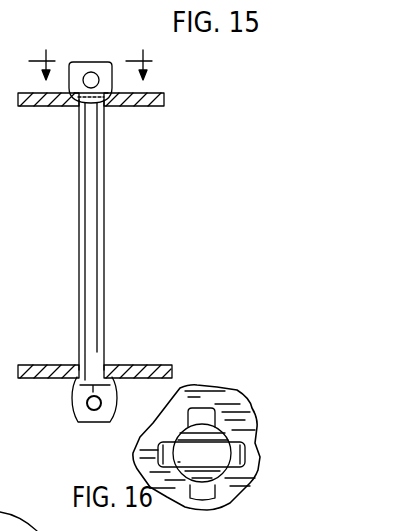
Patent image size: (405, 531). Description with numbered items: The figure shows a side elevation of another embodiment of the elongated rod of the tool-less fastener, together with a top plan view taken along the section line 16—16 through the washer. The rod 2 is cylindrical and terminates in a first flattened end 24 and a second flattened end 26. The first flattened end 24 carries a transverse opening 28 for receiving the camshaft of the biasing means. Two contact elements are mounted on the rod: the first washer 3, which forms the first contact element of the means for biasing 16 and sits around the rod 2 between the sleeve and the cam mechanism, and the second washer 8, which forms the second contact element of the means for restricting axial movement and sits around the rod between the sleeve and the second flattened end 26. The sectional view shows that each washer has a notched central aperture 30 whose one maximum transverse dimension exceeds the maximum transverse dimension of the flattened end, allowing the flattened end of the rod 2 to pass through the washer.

In FIG. 15, the rod 2 is at (80, 290).
In FIG. 15, the first washer 3 is at (172, 367).
In FIG. 15, the second washer 8 is at (165, 97).
In FIG. 15, the means for biasing 16 is at (95, 52).
In FIG. 15, the first flattened end 24 is at (77, 410).
In FIG. 15, the second flattened end 26 is at (88, 62).
In FIG. 15, the transverse opening 28 is at (94, 410).
In FIG. 16, the notched central aperture 30 is at (212, 410).